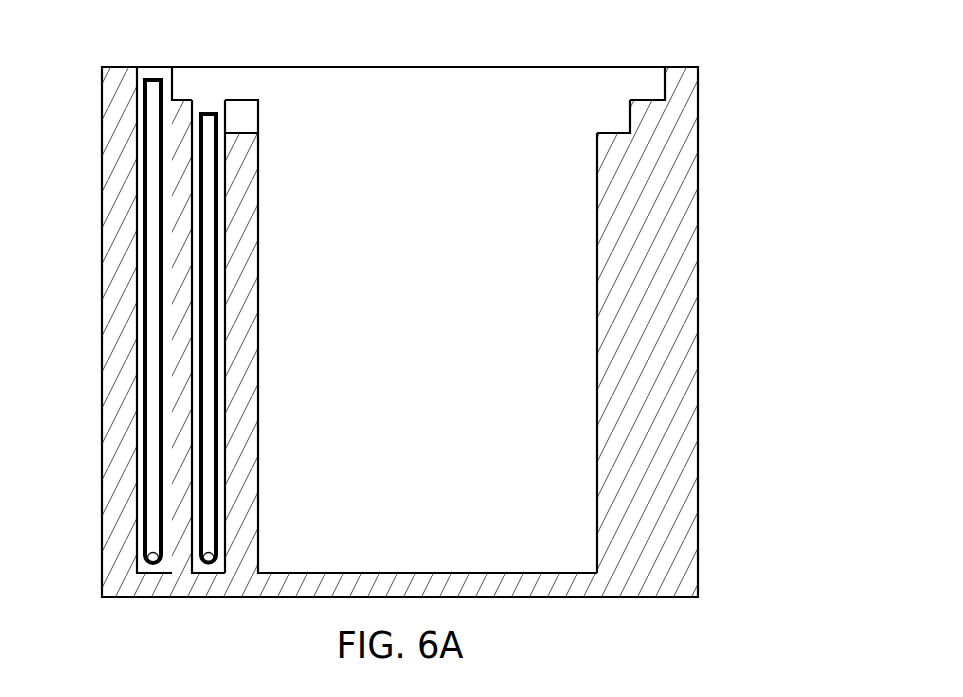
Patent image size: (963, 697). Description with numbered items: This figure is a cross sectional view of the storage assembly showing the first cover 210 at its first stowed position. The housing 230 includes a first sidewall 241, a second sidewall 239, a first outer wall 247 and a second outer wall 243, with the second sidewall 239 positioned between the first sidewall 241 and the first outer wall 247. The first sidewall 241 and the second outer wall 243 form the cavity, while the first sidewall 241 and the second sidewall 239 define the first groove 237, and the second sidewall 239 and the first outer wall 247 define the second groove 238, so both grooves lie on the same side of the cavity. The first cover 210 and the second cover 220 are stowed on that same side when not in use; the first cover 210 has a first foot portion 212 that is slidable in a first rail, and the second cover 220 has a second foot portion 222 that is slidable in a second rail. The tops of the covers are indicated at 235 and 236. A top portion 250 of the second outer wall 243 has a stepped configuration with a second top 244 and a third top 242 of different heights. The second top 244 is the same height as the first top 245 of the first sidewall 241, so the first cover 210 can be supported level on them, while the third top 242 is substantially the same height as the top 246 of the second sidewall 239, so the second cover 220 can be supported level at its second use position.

The first cover 210 is at (212, 213).
The first foot portion 212 is at (208, 563).
The second cover 220 is at (152, 152).
The second foot portion 222 is at (153, 563).
The housing 230 is at (702, 411).
The first electrode top 235 is at (205, 112).
The second electrode top 236 is at (153, 67).
The first groove 237 is at (222, 270).
The second groove 238 is at (140, 237).
The second sidewall 239 is at (178, 302).
The first sidewall 241 is at (240, 360).
The third top 242 is at (647, 98).
The second outer wall 243 is at (682, 172).
The second top 244 is at (612, 130).
The first top 245 is at (244, 133).
The top of the second sidewall 246 is at (177, 100).
The first outer wall 247 is at (123, 380).
The top portion 250 is at (665, 112).